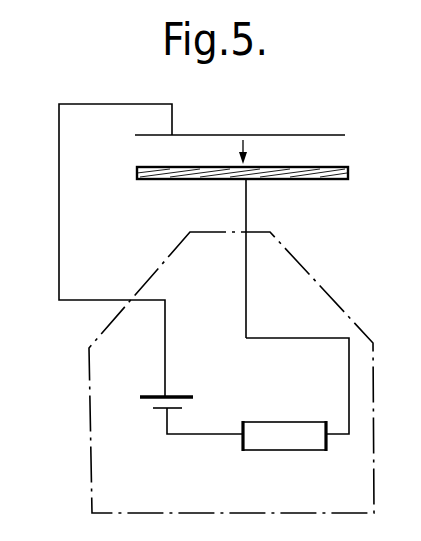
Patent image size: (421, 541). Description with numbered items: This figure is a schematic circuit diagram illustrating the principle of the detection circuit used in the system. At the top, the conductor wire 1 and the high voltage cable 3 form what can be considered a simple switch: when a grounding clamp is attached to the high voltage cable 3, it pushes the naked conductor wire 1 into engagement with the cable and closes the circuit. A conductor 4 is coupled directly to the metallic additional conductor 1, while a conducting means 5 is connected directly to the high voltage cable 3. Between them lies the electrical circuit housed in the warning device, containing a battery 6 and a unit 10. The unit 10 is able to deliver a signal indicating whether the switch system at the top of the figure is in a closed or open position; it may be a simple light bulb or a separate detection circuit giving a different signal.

The conductor wire 1 is at (283, 135).
The high voltage cable 3 is at (310, 180).
The conductor 4 is at (59, 181).
The conducting means 5 is at (243, 197).
The battery 6 is at (161, 411).
The unit 10 is at (263, 450).